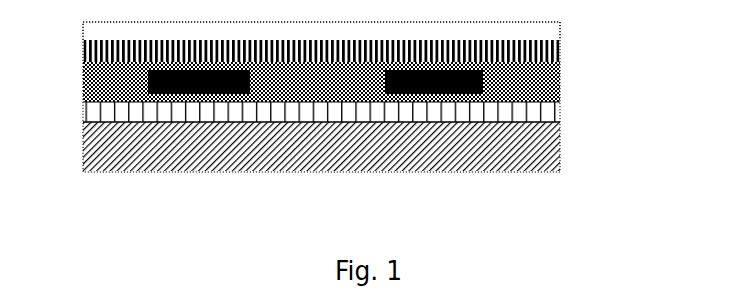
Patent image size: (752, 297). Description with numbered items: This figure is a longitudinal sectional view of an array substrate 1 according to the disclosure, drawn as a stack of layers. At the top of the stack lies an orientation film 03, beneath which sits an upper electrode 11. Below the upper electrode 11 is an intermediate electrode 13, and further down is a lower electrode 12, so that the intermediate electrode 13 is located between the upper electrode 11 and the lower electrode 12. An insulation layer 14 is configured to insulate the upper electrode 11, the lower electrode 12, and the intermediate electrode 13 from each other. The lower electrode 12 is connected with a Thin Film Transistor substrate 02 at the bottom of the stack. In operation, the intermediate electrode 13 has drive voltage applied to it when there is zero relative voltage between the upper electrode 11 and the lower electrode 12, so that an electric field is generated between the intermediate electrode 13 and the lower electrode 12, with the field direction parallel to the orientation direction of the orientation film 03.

The array substrate 1 is at (72, 42).
The Thin Film Transistor substrate 02 is at (560, 153).
The orientation film 03 is at (560, 32).
The upper electrode 11 is at (560, 44).
The lower electrode 12 is at (540, 115).
The intermediate electrode 13 is at (560, 82).
The insulation layer 14 is at (560, 69).